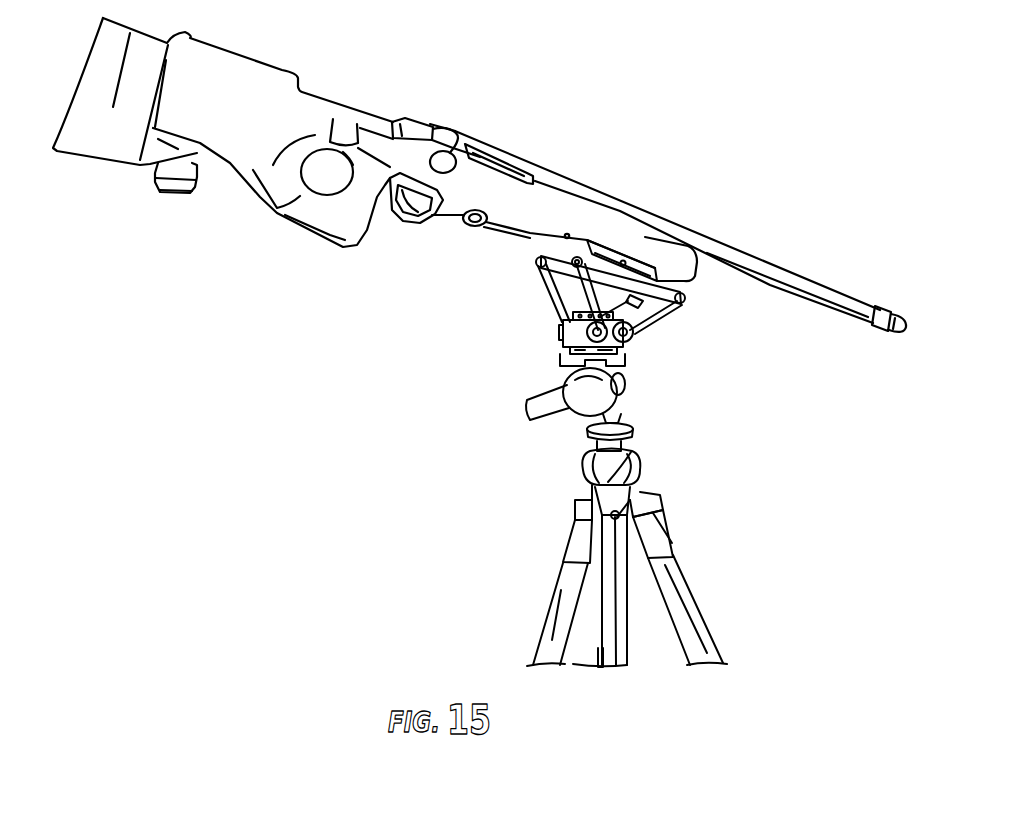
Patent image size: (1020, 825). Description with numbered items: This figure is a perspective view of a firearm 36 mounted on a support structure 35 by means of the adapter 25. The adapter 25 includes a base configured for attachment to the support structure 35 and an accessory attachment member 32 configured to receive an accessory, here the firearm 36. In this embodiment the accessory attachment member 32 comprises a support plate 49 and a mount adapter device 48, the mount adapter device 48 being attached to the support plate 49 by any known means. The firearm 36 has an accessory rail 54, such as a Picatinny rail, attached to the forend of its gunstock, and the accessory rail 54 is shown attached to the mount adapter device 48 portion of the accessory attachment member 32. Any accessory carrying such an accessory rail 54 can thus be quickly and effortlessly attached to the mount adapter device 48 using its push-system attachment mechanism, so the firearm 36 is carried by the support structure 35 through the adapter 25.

The firearm 36 is at (240, 133).
The mount adapter device 48 is at (637, 266).
The accessory attachment member 32 is at (589, 302).
The accessory rail 54 is at (578, 249).
The support plate 49 is at (657, 293).
The adapter 25 is at (570, 339).
The support structure 35 is at (640, 470).